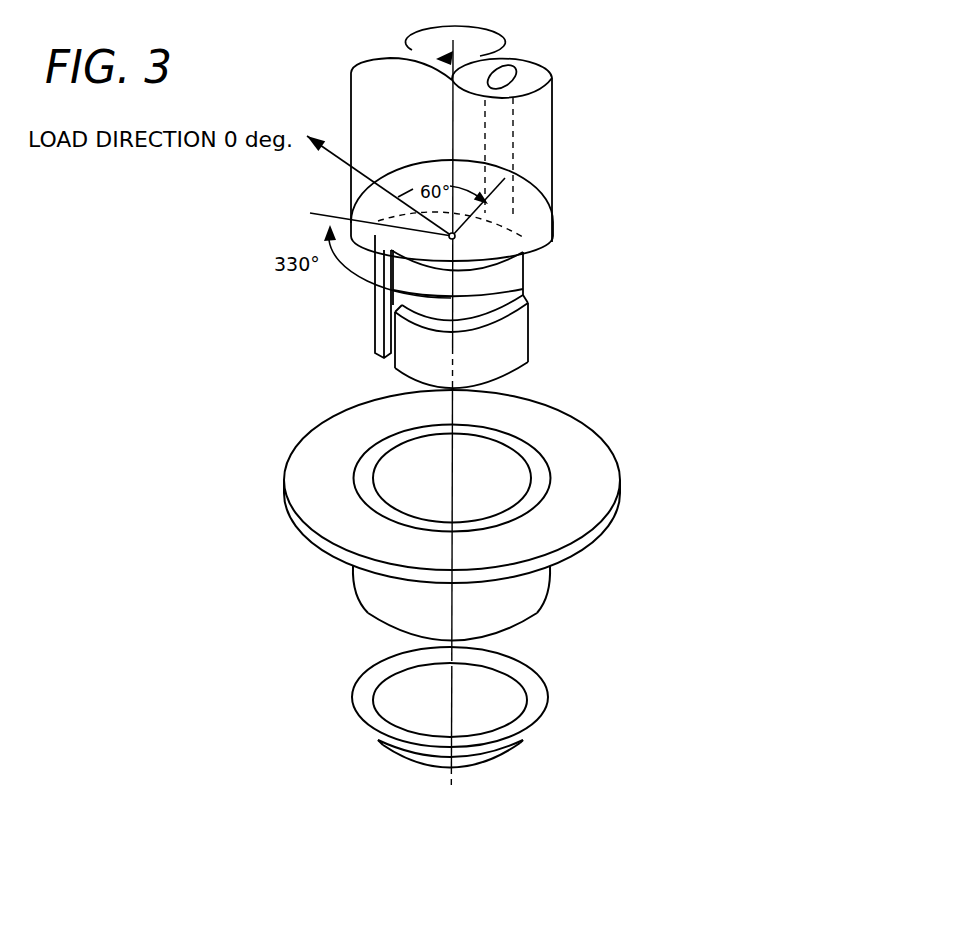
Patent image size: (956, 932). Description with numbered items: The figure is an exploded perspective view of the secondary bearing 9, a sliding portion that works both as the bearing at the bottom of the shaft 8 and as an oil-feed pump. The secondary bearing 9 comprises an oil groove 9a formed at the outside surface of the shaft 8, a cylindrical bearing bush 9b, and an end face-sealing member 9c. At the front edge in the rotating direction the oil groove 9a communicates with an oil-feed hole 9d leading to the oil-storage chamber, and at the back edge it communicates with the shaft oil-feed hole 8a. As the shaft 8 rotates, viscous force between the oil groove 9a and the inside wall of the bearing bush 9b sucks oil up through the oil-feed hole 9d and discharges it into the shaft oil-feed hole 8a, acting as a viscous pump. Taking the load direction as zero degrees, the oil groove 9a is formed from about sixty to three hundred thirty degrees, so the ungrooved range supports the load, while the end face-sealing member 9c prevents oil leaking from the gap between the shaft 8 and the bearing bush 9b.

The shaft 8 is at (540, 110).
The shaft oil-feed hole 8a is at (503, 180).
The secondary bearing 9 is at (618, 477).
The oil groove 9a is at (498, 302).
The cylindrical bearing bush 9b is at (522, 440).
The end face-sealing member 9c is at (512, 668).
The oil-feed hole 9d is at (375, 333).